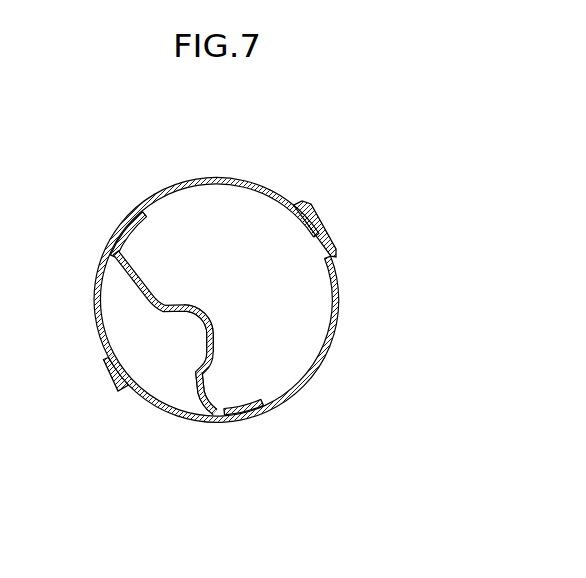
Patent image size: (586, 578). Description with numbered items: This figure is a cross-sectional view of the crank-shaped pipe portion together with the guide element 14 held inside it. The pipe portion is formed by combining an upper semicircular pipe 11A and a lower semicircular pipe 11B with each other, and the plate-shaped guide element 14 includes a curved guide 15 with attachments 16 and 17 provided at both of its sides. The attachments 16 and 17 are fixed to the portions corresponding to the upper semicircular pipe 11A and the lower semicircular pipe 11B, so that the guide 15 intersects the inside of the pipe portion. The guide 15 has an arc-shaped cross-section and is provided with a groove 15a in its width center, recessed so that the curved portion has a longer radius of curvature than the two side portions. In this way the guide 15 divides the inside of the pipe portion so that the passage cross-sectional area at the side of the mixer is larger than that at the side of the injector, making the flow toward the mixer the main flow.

The upper semicircular pipe 11A is at (210, 176).
The lower semicircular pipe 11B is at (323, 348).
The guide element 14 is at (213, 334).
The guide 15 is at (138, 286).
The groove 15a is at (196, 322).
The attachment 16 is at (147, 214).
The attachment 17 is at (237, 401).